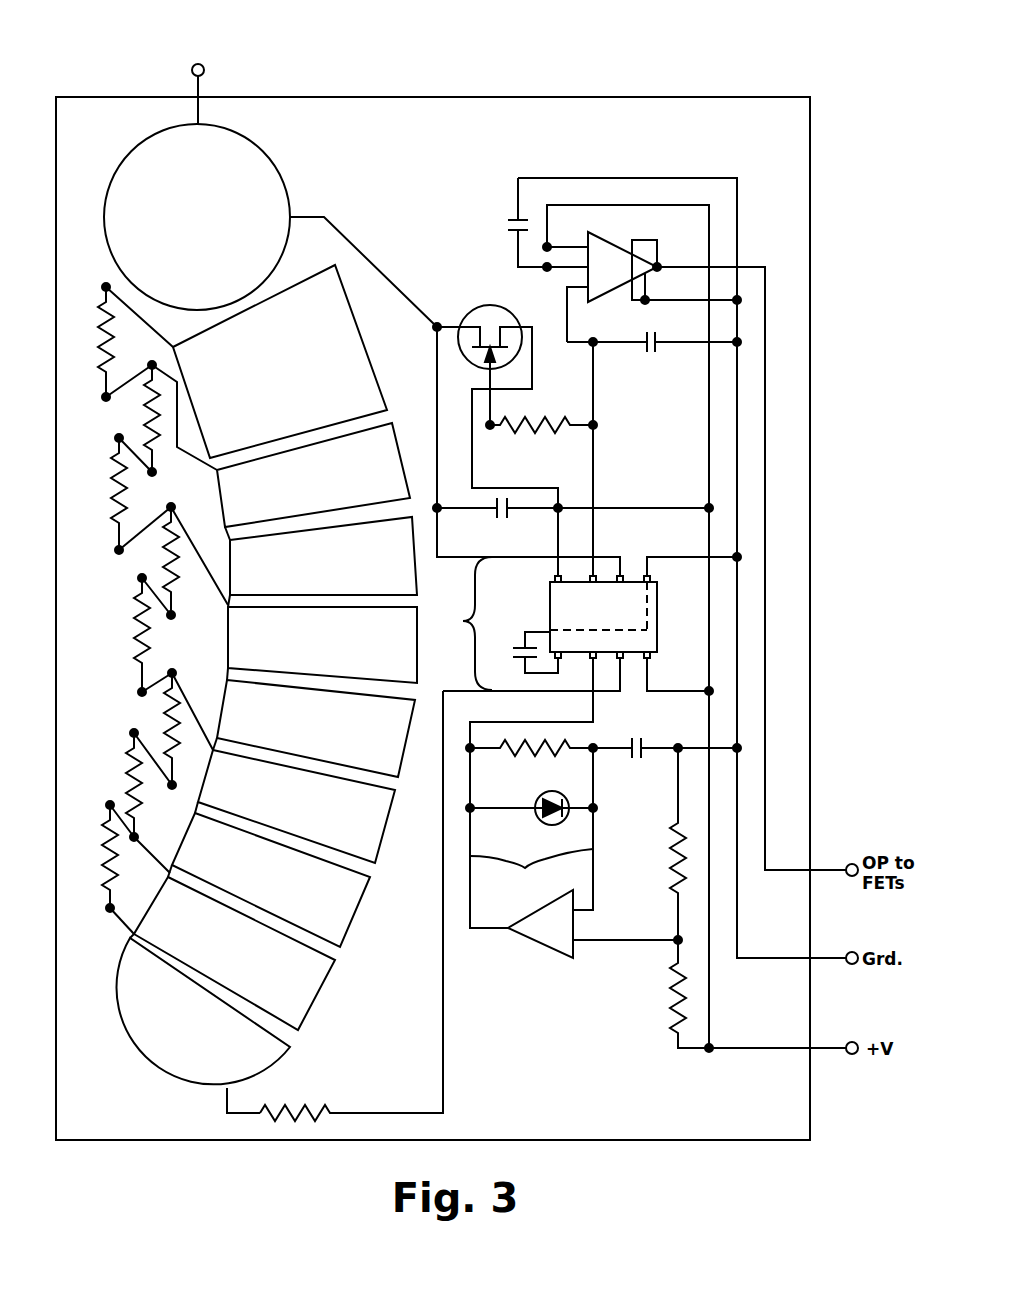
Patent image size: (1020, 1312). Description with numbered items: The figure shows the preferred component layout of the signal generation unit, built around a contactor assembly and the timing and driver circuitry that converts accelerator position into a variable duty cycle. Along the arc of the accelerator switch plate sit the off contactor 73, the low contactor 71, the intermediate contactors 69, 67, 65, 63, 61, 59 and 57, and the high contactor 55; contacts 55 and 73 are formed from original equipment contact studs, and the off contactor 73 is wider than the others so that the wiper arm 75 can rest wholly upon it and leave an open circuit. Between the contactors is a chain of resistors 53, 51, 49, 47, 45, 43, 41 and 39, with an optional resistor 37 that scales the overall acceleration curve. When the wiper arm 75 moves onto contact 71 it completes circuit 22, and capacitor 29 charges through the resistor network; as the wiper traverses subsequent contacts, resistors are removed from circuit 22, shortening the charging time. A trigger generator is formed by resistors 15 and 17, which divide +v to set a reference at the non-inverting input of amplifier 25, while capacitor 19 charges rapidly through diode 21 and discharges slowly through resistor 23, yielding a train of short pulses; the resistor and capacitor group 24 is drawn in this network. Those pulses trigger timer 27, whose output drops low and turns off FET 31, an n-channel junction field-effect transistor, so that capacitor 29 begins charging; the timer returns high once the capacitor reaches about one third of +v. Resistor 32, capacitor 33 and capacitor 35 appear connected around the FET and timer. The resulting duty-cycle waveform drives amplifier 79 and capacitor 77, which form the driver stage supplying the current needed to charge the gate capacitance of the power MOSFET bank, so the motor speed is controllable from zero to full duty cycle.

The resistor 15 is at (670, 1001).
The resistor 17 is at (672, 856).
The capacitor 19 is at (640, 737).
The diode 21 is at (542, 821).
The circuit 22 is at (462, 623).
The resistor 23 is at (547, 759).
The RC network 24 is at (531, 869).
The amplifier 25 is at (595, 924).
The timer 27 is at (549, 597).
The capacitor 29 is at (502, 520).
The FET 31 is at (482, 306).
The resistor 32 is at (517, 437).
The capacitor 33 is at (653, 356).
The capacitor 35 is at (515, 650).
The resistor 37 is at (302, 1108).
The resistor 39 is at (105, 852).
The resistor 41 is at (127, 780).
The resistor 43 is at (157, 723).
The resistor 45 is at (132, 652).
The resistor 47 is at (160, 560).
The resistor 49 is at (112, 487).
The resistor 51 is at (140, 408).
The resistor 53 is at (103, 357).
The high contactor 55 is at (203, 1025).
The intermediate contactor 57 is at (232, 953).
The intermediate contactor 59 is at (269, 880).
The intermediate contactor 61 is at (295, 806).
The intermediate contactor 63 is at (314, 728).
The intermediate contactor 65 is at (322, 645).
The intermediate contactor 67 is at (322, 562).
The intermediate contactor 69 is at (313, 481).
The low contactor 71 is at (280, 361).
The off contactor 73 is at (270, 225).
The wiper arm 75 is at (199, 68).
The capacitor 77 is at (505, 223).
The amplifier 79 is at (694, 626).